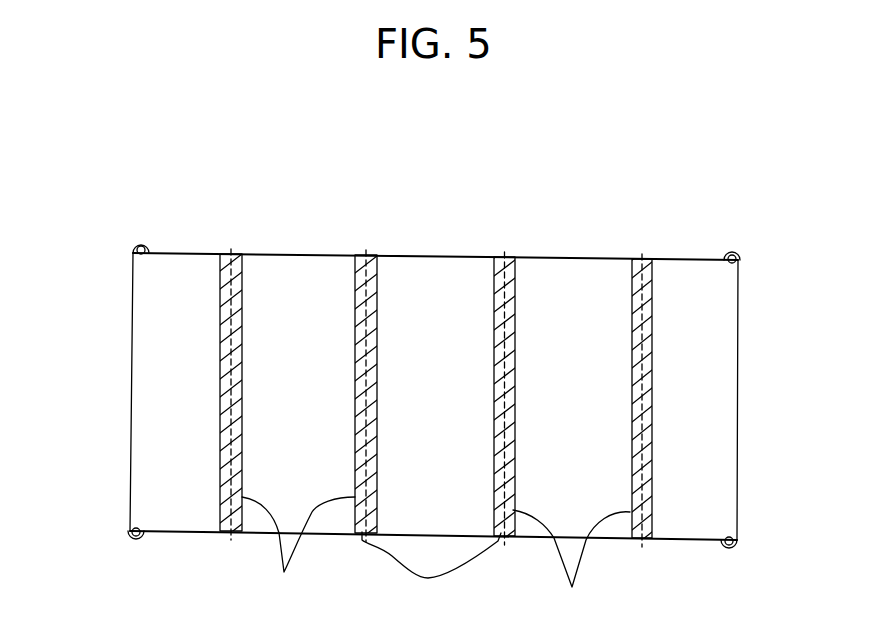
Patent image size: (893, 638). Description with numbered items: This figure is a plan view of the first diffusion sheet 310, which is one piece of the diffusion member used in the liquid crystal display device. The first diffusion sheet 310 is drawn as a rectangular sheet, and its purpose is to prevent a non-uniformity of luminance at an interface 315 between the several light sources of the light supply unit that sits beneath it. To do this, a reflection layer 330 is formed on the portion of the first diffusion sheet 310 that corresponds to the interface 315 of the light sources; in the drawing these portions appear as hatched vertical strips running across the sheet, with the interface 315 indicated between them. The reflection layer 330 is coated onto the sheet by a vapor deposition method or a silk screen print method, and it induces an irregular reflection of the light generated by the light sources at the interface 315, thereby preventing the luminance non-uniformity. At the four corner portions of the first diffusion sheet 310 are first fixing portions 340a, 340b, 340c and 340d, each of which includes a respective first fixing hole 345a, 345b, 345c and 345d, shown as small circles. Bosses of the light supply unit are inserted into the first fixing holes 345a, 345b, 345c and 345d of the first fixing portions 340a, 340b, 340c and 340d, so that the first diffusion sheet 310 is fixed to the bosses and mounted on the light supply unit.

The first diffusion sheet 310 is at (428, 256).
The interface 315 is at (431, 571).
The reflection layer 330 is at (436, 556).
The first fixing portion 340a is at (132, 251).
The first fixing portion 340b is at (130, 531).
The first fixing portion 340c is at (728, 548).
The first fixing portion 340d is at (731, 254).
The first fixing hole 345a is at (141, 246).
The first fixing hole 345b is at (136, 540).
The first fixing hole 345c is at (737, 541).
The first fixing hole 345d is at (741, 259).